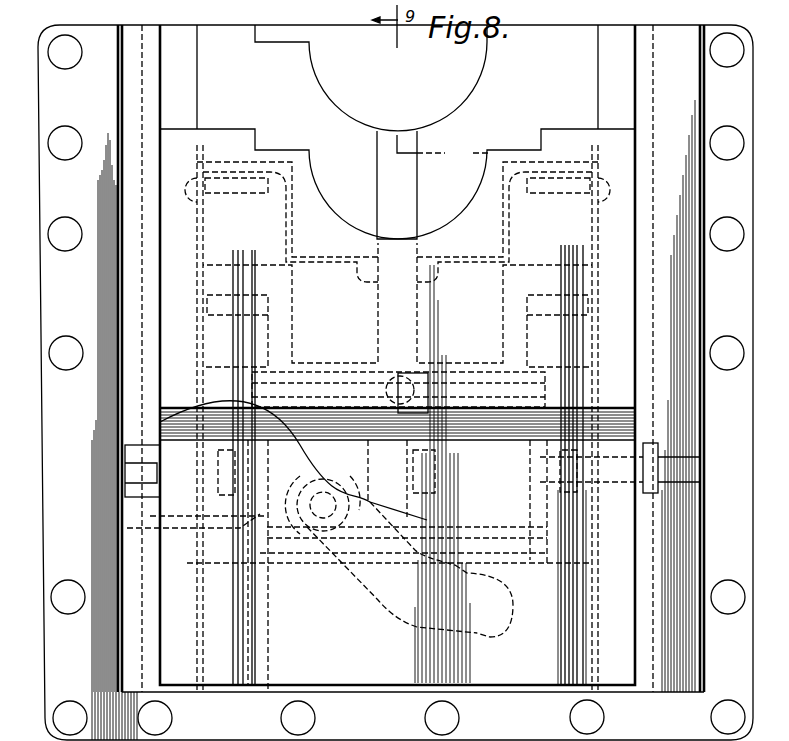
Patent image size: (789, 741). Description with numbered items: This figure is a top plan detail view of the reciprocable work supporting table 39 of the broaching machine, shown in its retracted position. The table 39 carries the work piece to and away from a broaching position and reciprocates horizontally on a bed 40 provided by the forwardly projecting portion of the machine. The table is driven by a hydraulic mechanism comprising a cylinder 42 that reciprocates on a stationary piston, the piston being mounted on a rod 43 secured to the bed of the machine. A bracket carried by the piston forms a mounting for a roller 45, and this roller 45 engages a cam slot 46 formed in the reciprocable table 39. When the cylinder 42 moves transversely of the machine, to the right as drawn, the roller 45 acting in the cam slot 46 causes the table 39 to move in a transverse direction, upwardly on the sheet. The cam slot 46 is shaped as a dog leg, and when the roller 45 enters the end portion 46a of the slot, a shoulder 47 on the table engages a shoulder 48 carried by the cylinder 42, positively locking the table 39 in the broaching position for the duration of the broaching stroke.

The work supporting table 39 is at (220, 630).
The bed 40 is at (46, 547).
The cylinder 42 is at (127, 528).
The rod 43 is at (497, 482).
The roller 45 is at (252, 516).
The cam slot 46 is at (370, 587).
The end portion of the slot 46a is at (490, 637).
The shoulder 47 is at (385, 508).
The shoulder 48 is at (160, 422).